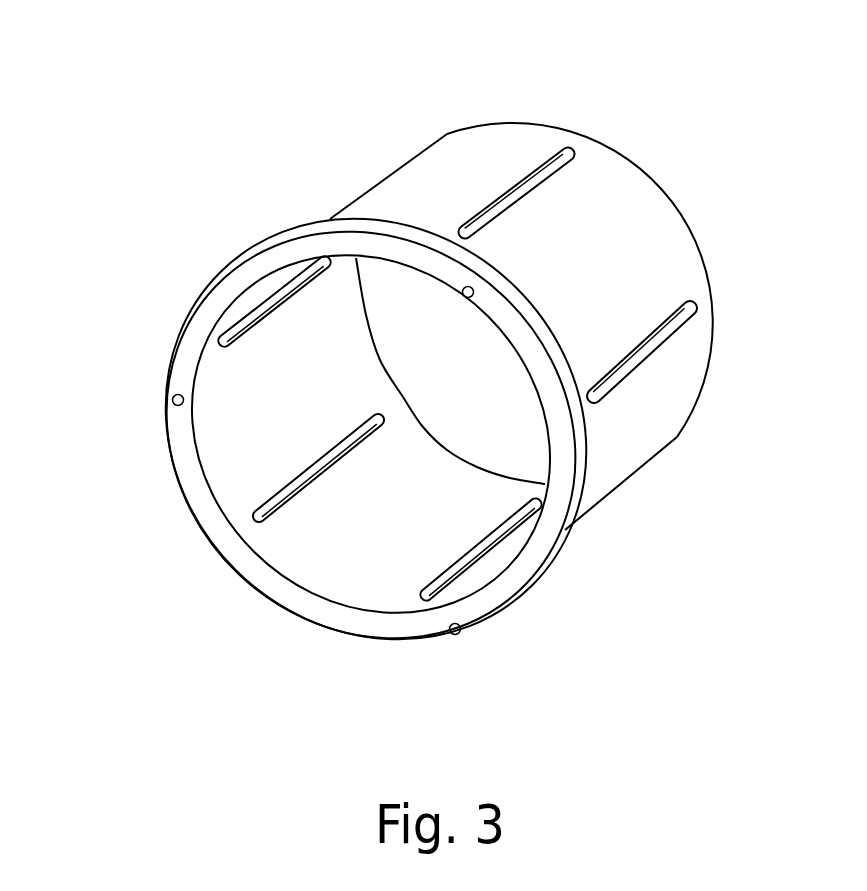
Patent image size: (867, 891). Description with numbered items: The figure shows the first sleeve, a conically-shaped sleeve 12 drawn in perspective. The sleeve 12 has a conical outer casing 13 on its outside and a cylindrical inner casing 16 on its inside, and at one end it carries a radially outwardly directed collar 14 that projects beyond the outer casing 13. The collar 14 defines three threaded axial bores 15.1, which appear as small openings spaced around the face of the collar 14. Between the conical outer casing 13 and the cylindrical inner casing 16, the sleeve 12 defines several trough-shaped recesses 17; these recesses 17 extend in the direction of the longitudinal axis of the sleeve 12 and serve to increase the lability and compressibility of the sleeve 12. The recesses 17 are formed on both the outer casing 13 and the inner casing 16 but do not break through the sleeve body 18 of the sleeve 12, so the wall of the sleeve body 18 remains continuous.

The conically-shaped sleeve 12 is at (600, 105).
The conical outer casing 13 is at (600, 203).
The radially outwardly directed collar 14 is at (325, 228).
The threaded axial bores 15.1 is at (474, 287).
The cylindrical inner casing 16 is at (290, 377).
The trough-shaped recesses 17 is at (496, 203).
The sleeve body 18 is at (648, 483).